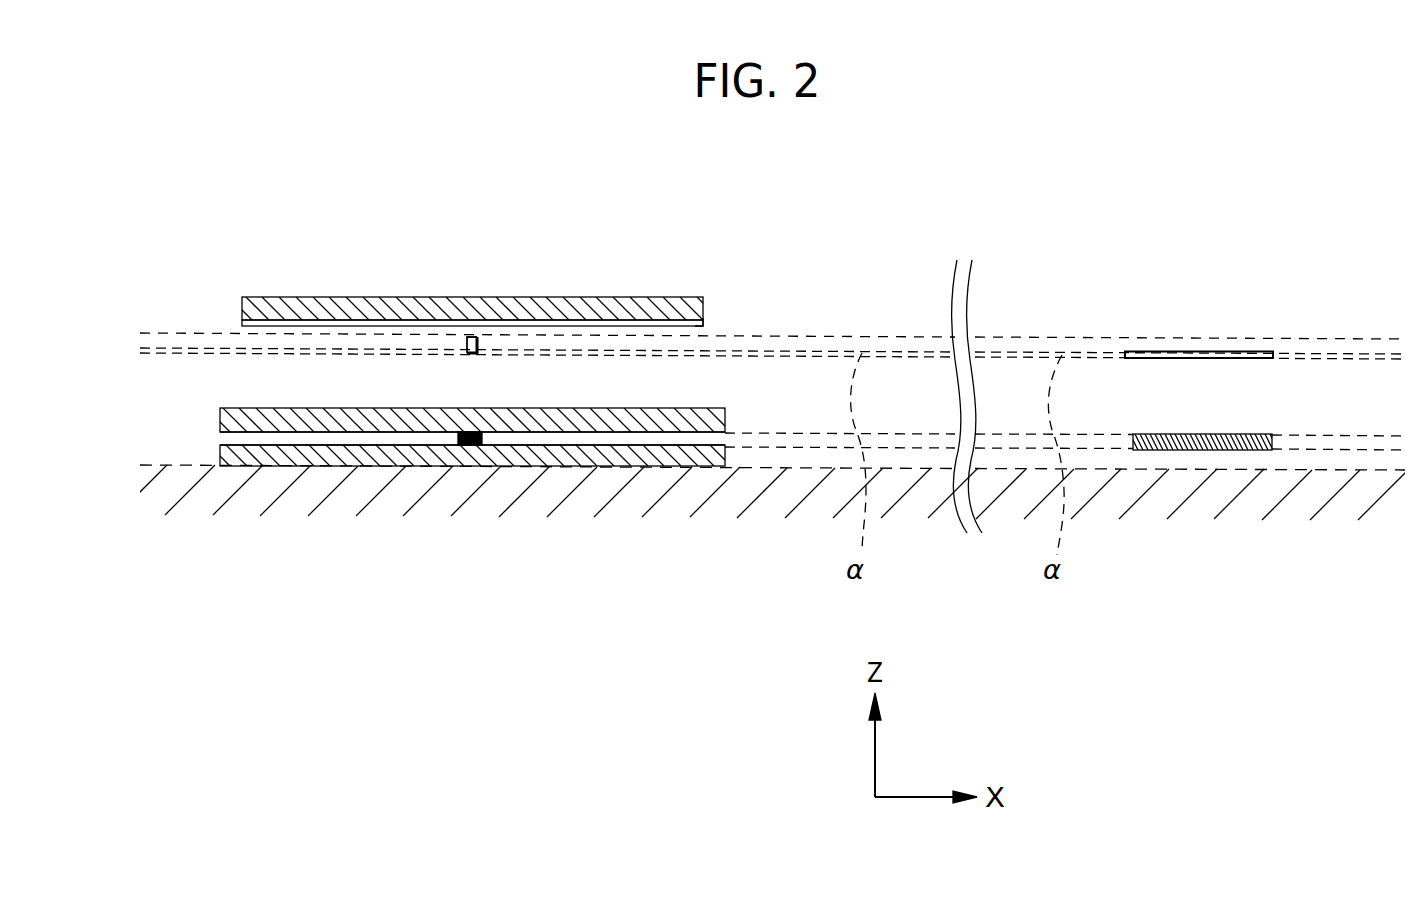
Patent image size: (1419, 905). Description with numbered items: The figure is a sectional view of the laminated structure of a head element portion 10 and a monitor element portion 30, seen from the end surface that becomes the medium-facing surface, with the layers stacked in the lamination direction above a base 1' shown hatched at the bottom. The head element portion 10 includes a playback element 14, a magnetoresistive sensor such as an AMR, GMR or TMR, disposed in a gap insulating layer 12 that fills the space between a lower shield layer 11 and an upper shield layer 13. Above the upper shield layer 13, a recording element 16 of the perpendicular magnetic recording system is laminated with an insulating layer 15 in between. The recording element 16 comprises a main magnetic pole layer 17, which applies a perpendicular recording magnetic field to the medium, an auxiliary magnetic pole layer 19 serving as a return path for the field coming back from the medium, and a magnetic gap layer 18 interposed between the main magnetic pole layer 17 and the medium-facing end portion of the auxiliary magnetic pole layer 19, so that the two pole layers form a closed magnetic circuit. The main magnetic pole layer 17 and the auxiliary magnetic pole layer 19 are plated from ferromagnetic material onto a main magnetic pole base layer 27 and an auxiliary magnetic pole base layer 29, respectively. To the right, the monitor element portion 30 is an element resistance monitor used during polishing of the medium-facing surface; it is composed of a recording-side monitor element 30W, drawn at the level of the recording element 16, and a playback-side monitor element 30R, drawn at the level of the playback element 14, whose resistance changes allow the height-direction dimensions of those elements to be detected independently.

The base surface 1' is at (751, 492).
The head element portion 10 is at (497, 240).
The lower shield layer 11 is at (223, 455).
The gap insulating layer 12 is at (223, 437).
The upper shield layer 13 is at (220, 420).
The playback element 14 is at (470, 445).
The insulating layer 15 is at (207, 383).
The recording element 16 is at (458, 292).
The main magnetic pole layer 17 is at (478, 343).
The magnetic gap layer 18 is at (564, 333).
The auxiliary magnetic pole layer 19 is at (662, 305).
The main magnetic pole base layer 27 is at (467, 350).
The auxiliary magnetic pole base layer 29 is at (703, 327).
The monitor element portion 30 is at (1202, 313).
The recording-side monitor element 30W is at (1250, 355).
The playback-side monitor element 30R is at (1250, 434).